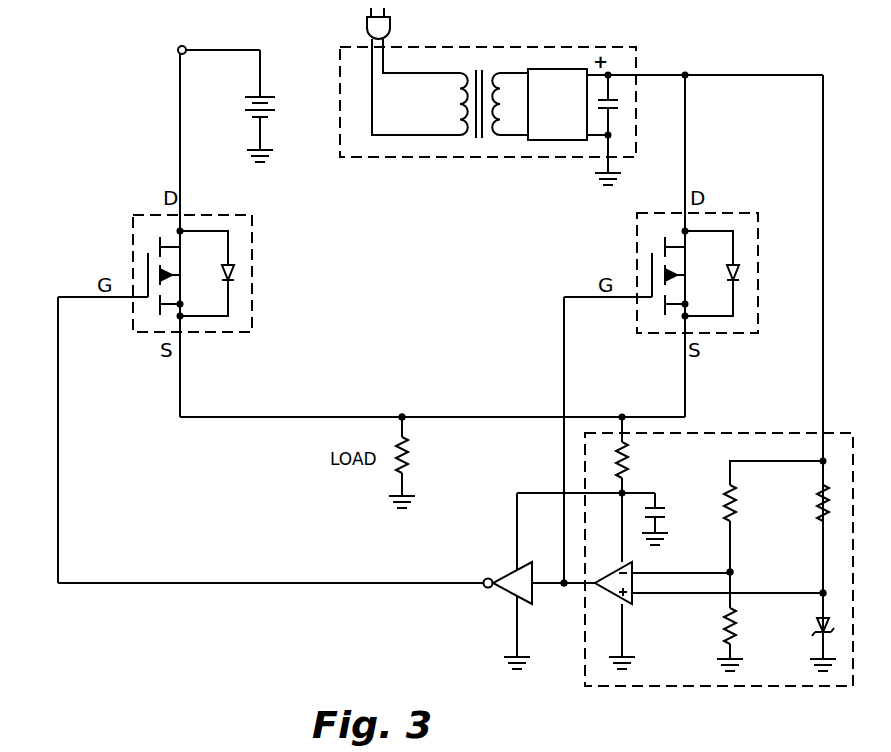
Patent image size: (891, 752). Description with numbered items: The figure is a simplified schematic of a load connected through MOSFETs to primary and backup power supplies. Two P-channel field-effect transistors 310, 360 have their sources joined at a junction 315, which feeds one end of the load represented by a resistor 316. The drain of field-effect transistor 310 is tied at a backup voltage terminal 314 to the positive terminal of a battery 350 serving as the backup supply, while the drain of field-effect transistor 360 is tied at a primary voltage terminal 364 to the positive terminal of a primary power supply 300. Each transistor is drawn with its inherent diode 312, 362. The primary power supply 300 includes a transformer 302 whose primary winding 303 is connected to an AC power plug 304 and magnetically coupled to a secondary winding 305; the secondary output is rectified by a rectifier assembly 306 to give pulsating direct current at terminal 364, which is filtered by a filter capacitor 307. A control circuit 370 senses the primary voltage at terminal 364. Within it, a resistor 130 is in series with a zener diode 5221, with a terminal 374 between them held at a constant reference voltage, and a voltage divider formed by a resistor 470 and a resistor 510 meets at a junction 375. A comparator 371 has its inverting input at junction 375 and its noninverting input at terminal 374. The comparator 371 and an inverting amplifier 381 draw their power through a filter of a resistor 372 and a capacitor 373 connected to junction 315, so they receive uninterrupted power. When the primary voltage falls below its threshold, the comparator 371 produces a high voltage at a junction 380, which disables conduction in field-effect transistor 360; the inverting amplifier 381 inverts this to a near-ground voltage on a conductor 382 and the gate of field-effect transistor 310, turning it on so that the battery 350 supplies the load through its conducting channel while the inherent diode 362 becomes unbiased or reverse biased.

The backup voltage terminal 314 is at (178, 49).
The battery 350 is at (274, 103).
The primary power supply 300 is at (465, 157).
The transformer 302 is at (486, 45).
The primary winding 303 is at (460, 105).
The AC power plug 304 is at (387, 32).
The secondary winding 305 is at (500, 76).
The rectifier assembly 306 is at (572, 69).
The filter capacitor 307 is at (620, 105).
The primary voltage terminal 364 is at (685, 72).
The field-effect transistor 310 is at (218, 310).
The inherent diode 312 is at (228, 264).
The field-effect transistor 360 is at (721, 310).
The inherent diode 362 is at (733, 267).
The junction 315 is at (402, 414).
The resistor 316 is at (408, 466).
The control circuit 370 is at (795, 580).
The comparator 371 is at (633, 604).
The resistor 372 is at (628, 466).
The capacitor 373 is at (665, 515).
The terminal 374 is at (818, 596).
The junction 375 is at (728, 571).
The junction 380 is at (563, 587).
The inverting amplifier 381 is at (512, 573).
The conductor 382 is at (342, 580).
The resistor 470 is at (735, 492).
The resistor 510 is at (726, 644).
The resistor 130 is at (817, 508).
The zener diode 5221 is at (815, 636).